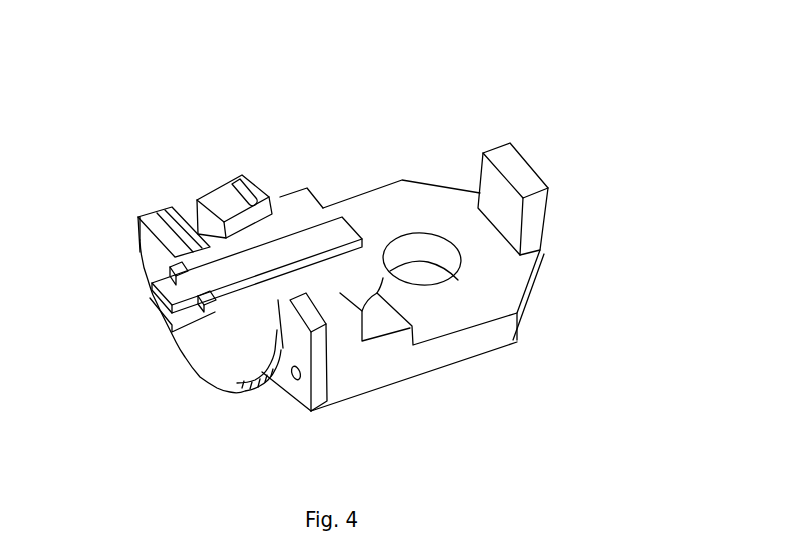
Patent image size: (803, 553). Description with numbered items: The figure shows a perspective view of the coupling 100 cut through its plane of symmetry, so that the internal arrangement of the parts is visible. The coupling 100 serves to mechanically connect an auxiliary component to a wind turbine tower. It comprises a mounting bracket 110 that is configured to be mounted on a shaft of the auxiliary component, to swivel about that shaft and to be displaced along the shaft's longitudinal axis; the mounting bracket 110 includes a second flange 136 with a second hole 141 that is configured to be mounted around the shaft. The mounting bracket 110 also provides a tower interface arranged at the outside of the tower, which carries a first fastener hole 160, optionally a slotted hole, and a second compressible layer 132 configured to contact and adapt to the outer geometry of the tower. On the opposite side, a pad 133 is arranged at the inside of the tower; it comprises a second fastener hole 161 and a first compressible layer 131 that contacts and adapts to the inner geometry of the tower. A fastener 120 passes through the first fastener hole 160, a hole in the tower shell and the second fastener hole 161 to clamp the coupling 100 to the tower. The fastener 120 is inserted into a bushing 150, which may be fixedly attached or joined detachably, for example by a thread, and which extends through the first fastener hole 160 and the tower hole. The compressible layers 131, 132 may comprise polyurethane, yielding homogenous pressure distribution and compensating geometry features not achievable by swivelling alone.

The coupling 100 is at (484, 107).
The mounting bracket 110 is at (359, 210).
The fastener 120 is at (158, 302).
The first compressible layer 131 is at (274, 380).
The second compressible layer 132 is at (212, 202).
The pad 133 is at (198, 367).
The second flange 136 is at (517, 273).
The second hole 141 is at (428, 276).
The bushing 150 is at (294, 196).
The first fastener hole 160 is at (263, 194).
The second fastener hole 161 is at (141, 218).